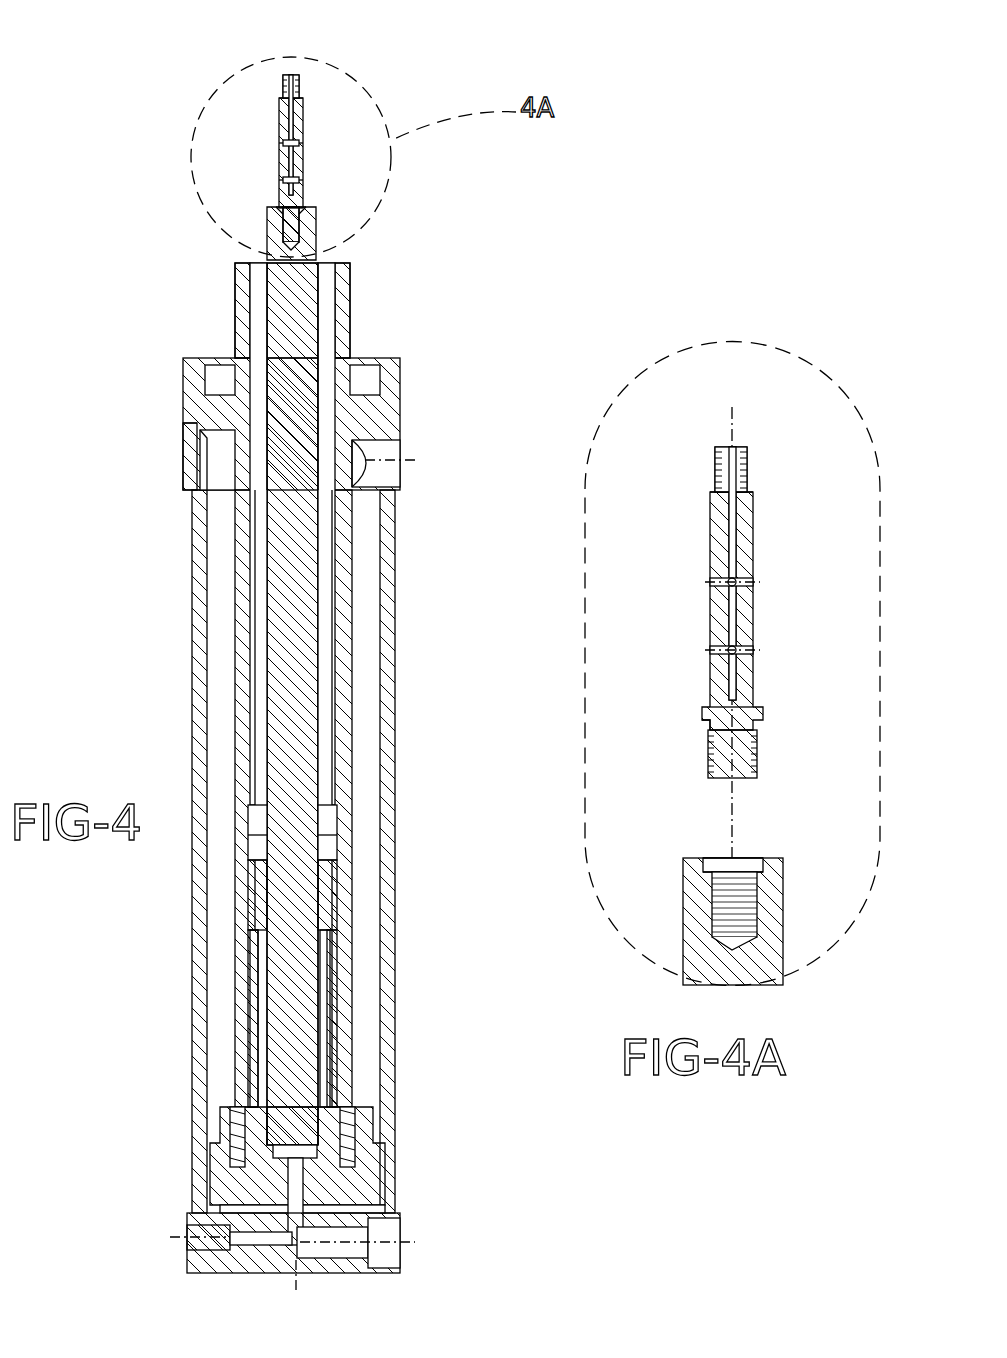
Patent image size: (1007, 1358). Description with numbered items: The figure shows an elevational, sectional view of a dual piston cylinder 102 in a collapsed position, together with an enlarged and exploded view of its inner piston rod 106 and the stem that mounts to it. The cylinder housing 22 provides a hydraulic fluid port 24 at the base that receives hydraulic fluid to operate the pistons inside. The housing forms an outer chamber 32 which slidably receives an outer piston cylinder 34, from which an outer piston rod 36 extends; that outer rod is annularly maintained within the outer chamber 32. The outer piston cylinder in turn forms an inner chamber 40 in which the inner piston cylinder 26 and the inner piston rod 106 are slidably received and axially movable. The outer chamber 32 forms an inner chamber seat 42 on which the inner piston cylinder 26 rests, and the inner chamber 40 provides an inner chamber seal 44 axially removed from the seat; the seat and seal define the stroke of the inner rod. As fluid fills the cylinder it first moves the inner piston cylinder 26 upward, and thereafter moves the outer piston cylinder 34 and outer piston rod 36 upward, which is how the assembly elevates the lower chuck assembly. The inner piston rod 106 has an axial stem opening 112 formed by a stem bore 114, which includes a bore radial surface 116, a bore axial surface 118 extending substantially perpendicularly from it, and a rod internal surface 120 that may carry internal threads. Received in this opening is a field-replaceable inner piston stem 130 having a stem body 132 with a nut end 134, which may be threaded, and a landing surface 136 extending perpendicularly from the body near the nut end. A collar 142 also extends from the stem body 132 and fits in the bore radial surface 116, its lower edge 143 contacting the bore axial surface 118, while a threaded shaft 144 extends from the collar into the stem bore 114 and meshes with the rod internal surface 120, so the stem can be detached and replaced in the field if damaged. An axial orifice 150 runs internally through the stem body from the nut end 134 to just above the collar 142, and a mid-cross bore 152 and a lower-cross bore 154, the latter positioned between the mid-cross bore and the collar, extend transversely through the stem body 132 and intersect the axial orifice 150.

In FIG. 4, the cylinder housing 22 is at (192, 715).
In FIG. 4, the hydraulic fluid port 24 is at (178, 1243).
In FIG. 4, the inner piston cylinder 26 is at (320, 1110).
In FIG. 4, the outer chamber 32 is at (365, 597).
In FIG. 4, the outer piston cylinder 34 is at (360, 1140).
In FIG. 4, the outer piston rod 36 is at (240, 960).
In FIG. 4, the inner chamber 40 is at (325, 705).
In FIG. 4, the inner chamber seat 42 is at (275, 1155).
In FIG. 4, the inner chamber seal 44 is at (255, 430).
In FIG. 4, the dual piston cylinder 102 is at (420, 400).
In FIG. 4, the inner piston rod 106 is at (262, 555).
In FIG. 4A, the inner piston rod 106 is at (683, 930).
In FIG. 4A, the axial stem opening 112 is at (725, 885).
In FIG. 4A, the stem bore 114 is at (722, 842).
In FIG. 4A, the bore radial surface 116 is at (758, 860).
In FIG. 4A, the bore axial surface 118 is at (715, 858).
In FIG. 4A, the rod internal surface 120 is at (750, 940).
In FIG. 4, the inner piston stem 130 is at (340, 110).
In FIG. 4A, the inner piston stem 130 is at (690, 528).
In FIG. 4, the stem body 132 is at (315, 162).
In FIG. 4A, the stem body 132 is at (708, 620).
In FIG. 4, the nut end 134 is at (300, 95).
In FIG. 4A, the nut end 134 is at (750, 458).
In FIG. 4, the landing surface 136 is at (280, 100).
In FIG. 4A, the landing surface 136 is at (712, 492).
In FIG. 4, the collar 142 is at (308, 200).
In FIG. 4A, the collar 142 is at (705, 707).
In FIG. 4A, the lower edge 143 is at (702, 716).
In FIG. 4, the threaded shaft 144 is at (280, 225).
In FIG. 4A, the threaded shaft 144 is at (757, 748).
In FIG. 4, the axial orifice 150 is at (270, 62).
In FIG. 4A, the axial orifice 150 is at (717, 437).
In FIG. 4, the mid-cross bore 152 is at (287, 143).
In FIG. 4A, the mid-cross bore 152 is at (745, 582).
In FIG. 4, the lower-cross bore 154 is at (290, 180).
In FIG. 4A, the lower-cross bore 154 is at (745, 650).